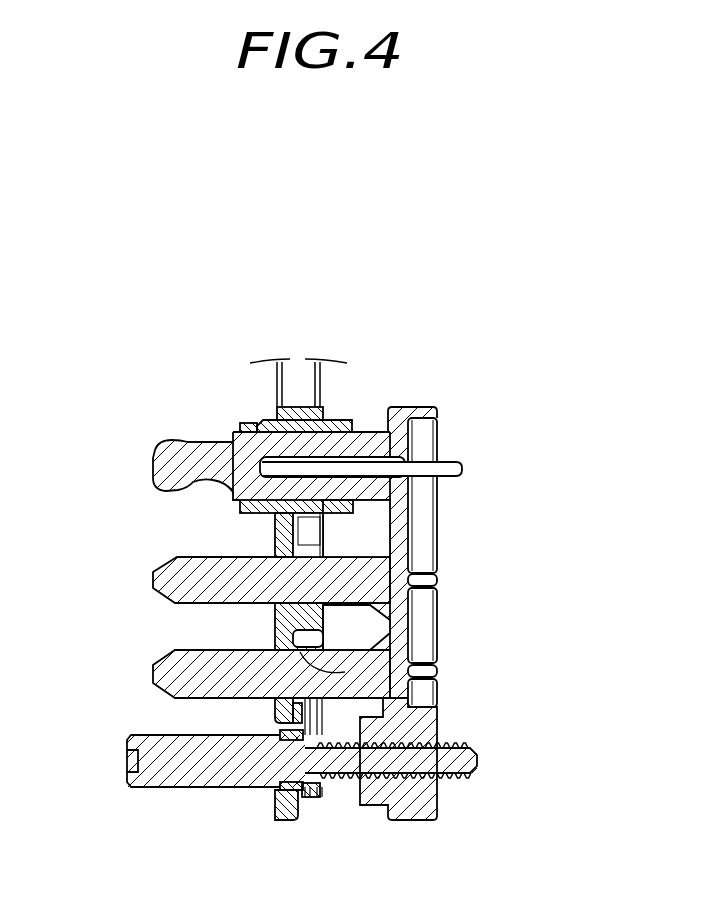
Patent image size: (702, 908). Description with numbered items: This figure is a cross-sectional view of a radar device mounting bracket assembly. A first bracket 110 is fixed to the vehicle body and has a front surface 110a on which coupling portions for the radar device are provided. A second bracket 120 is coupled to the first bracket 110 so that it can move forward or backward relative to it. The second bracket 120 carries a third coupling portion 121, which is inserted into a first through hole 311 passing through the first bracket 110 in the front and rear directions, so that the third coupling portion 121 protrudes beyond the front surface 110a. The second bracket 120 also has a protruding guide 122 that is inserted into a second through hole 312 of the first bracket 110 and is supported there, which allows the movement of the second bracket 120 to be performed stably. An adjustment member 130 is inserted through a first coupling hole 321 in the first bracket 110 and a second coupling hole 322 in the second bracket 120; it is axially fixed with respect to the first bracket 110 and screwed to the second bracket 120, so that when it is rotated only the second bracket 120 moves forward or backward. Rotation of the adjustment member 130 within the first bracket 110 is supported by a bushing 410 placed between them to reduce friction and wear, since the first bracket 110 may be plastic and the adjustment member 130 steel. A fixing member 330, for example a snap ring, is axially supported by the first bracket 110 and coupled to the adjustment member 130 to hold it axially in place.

The first bracket 110 is at (302, 375).
The front surface 110a is at (272, 387).
The second bracket 120 is at (425, 627).
The third coupling portion 121 is at (158, 465).
The guide 122 is at (160, 673).
The adjustment member 130 is at (173, 782).
The first through hole 311 is at (330, 432).
The second through hole 312 is at (300, 557).
The first coupling hole 321 is at (287, 757).
The second coupling hole 322 is at (443, 748).
The fixing member 330 is at (309, 795).
The bushing 410 is at (287, 822).